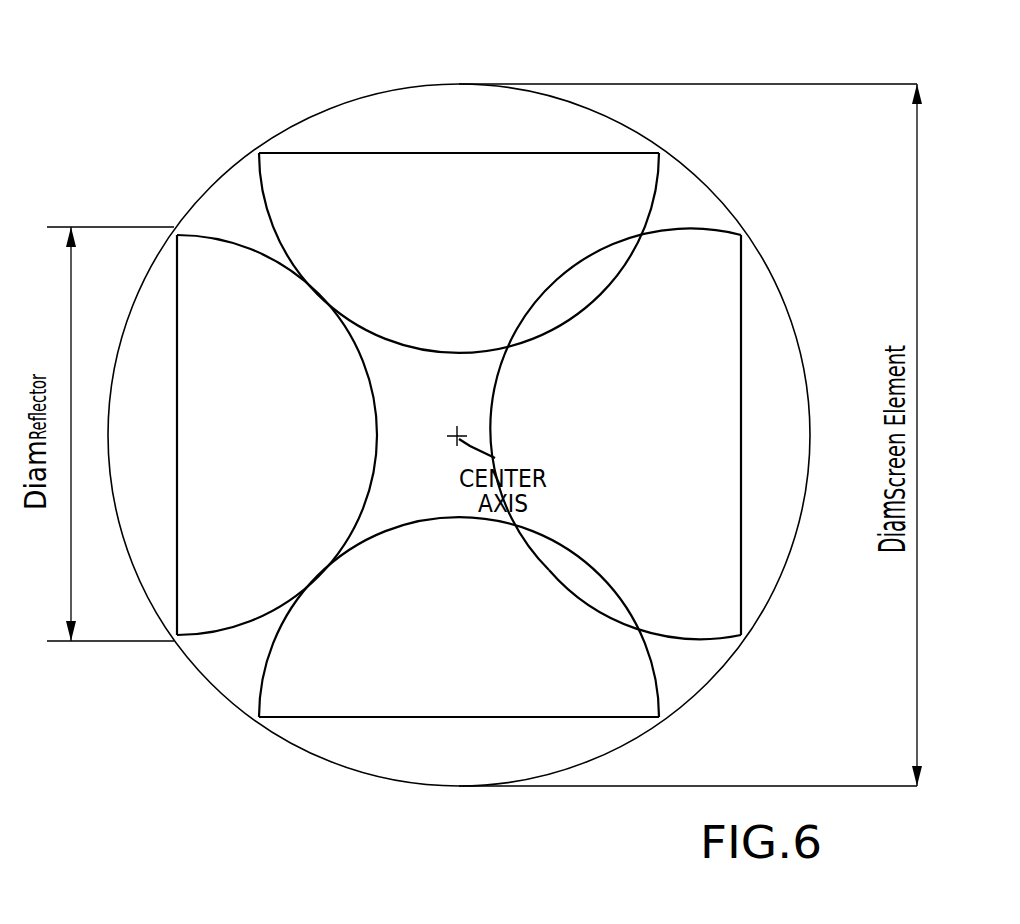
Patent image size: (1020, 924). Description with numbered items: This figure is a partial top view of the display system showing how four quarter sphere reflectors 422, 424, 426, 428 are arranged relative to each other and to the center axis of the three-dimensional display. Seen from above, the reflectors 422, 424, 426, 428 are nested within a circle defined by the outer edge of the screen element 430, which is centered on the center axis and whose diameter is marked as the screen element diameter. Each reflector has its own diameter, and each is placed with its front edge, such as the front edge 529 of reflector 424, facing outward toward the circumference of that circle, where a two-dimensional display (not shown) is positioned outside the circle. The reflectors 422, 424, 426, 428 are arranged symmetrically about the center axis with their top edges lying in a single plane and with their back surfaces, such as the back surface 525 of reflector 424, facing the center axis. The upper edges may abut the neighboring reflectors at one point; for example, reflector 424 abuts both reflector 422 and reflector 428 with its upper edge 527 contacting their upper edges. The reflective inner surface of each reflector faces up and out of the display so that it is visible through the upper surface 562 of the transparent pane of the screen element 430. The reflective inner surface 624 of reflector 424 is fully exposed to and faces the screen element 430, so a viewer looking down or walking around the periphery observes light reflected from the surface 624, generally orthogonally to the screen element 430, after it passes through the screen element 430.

The screen element 430 is at (482, 428).
The upper surface 562 is at (373, 110).
The quarter sphere reflector 422 is at (418, 742).
The quarter sphere reflector 424 is at (673, 492).
The quarter sphere reflector 426 is at (694, 218).
The quarter sphere reflector 428 is at (211, 649).
The back surface 525 is at (553, 385).
The upper edge 527 is at (727, 635).
The front edge 529 is at (745, 597).
The reflective inner surface 624 is at (621, 467).